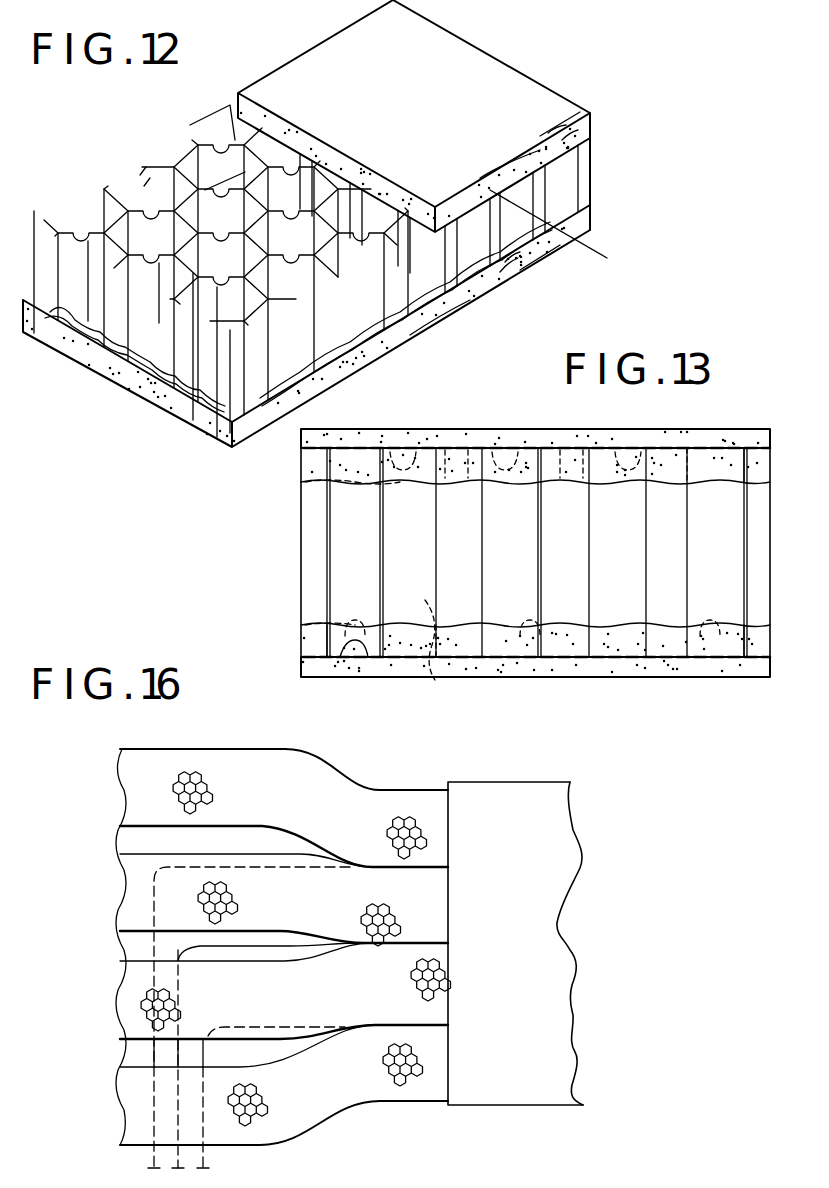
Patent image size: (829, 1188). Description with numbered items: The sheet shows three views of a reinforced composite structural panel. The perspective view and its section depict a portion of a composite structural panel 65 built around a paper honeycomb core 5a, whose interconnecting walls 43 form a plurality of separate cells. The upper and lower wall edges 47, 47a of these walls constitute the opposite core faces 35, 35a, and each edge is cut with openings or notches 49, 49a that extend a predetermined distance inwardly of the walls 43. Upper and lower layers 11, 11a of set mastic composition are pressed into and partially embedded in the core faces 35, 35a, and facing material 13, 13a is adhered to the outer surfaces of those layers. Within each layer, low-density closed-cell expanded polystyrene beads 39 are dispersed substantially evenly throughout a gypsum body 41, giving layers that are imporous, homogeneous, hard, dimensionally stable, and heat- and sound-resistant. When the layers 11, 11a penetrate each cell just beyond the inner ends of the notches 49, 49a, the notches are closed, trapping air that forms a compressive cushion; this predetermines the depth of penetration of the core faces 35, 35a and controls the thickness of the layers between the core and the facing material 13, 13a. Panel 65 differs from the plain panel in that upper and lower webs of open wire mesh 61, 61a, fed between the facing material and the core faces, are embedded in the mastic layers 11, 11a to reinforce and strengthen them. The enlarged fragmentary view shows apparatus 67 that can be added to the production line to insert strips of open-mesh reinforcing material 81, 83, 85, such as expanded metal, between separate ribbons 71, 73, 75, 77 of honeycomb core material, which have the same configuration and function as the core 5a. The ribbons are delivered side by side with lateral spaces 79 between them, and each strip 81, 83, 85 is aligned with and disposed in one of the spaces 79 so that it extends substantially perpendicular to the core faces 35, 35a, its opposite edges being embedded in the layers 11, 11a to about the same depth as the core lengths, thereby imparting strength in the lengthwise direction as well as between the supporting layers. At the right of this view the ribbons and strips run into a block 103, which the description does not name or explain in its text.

In FIG. 12, the honeycomb core 5a is at (73, 210).
In FIG. 13, the honeycomb core 5a is at (302, 570).
In FIG. 16, the honeycomb core 5a is at (178, 738).
In FIG. 12, the upper mastic layer 11 is at (498, 175).
In FIG. 13, the upper mastic layer 11 is at (552, 432).
In FIG. 12, the lower mastic layer 11a is at (430, 330).
In FIG. 13, the lower mastic layer 11a is at (558, 672).
In FIG. 12, the upper facing material 13 is at (212, 62).
In FIG. 13, the upper facing material 13 is at (508, 428).
In FIG. 12, the lower facing material 13a is at (384, 368).
In FIG. 13, the lower facing material 13a is at (502, 672).
In FIG. 12, the upper core face 35 is at (140, 172).
In FIG. 13, the upper core face 35 is at (688, 446).
In FIG. 12, the lower core face 35a is at (128, 390).
In FIG. 13, the lower core face 35a is at (430, 655).
In FIG. 12, the expanded polystyrene beads 39 is at (552, 130).
In FIG. 13, the expanded polystyrene beads 39 is at (358, 442).
In FIG. 12, the gypsum body 41 is at (592, 132).
In FIG. 13, the gypsum body 41 is at (398, 440).
In FIG. 12, the interconnecting walls 43 is at (78, 310).
In FIG. 13, the interconnecting walls 43 is at (315, 524).
In FIG. 13, the upper wall edges 47 is at (488, 500).
In FIG. 12, the lower wall edges 47a is at (272, 420).
In FIG. 13, the lower wall edges 47a is at (355, 660).
In FIG. 13, the upper notch 49 is at (504, 482).
In FIG. 13, the lower notch 49a is at (414, 633).
In FIG. 12, the upper wire mesh 61 is at (200, 118).
In FIG. 13, the upper wire mesh 61 is at (748, 446).
In FIG. 13, the lower wire mesh 61a is at (316, 660).
In FIG. 12, the composite structural panel 65 is at (418, 352).
In FIG. 13, the composite structural panel 65 is at (498, 408).
In FIG. 16, the apparatus 67 is at (372, 772).
In FIG. 16, the honeycomb core ribbon 71 is at (128, 1104).
In FIG. 16, the honeycomb core ribbon 73 is at (125, 998).
In FIG. 16, the honeycomb core ribbon 75 is at (125, 889).
In FIG. 16, the honeycomb core ribbon 77 is at (125, 788).
In FIG. 16, the lateral spaces 79 is at (125, 832).
In FIG. 16, the open-mesh reinforcing strip 81 is at (448, 1025).
In FIG. 16, the open-mesh reinforcing strip 83 is at (448, 943).
In FIG. 16, the open-mesh reinforcing strip 85 is at (448, 867).
In FIG. 16, the block 103 is at (560, 828).